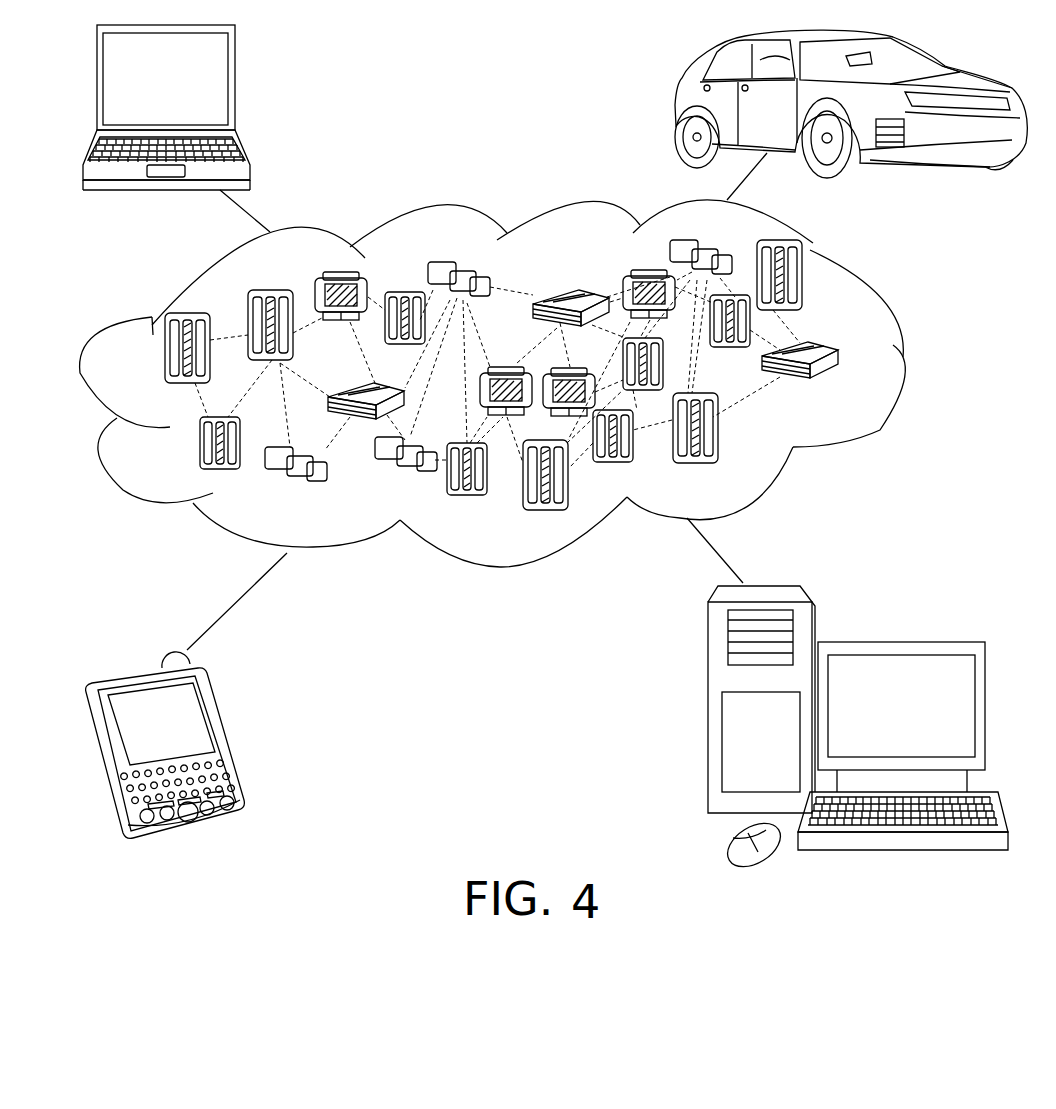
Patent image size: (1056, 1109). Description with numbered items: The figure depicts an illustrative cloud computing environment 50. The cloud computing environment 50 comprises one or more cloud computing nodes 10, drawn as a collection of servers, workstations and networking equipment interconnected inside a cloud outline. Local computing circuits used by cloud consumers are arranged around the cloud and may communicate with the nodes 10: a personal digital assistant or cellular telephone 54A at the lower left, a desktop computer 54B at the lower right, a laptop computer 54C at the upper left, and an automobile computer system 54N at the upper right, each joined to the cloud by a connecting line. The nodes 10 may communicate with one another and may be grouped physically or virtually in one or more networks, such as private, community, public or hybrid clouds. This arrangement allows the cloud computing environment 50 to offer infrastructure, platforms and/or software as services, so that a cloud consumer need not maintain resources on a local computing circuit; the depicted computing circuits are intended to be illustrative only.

The cloud computing node 10 is at (840, 387).
The cloud computing environment 50 is at (900, 362).
The personal digital assistant or cellular telephone 54A is at (225, 737).
The desktop computer 54B is at (898, 642).
The laptop computer 54C is at (237, 88).
The automobile computer system 54N is at (680, 103).